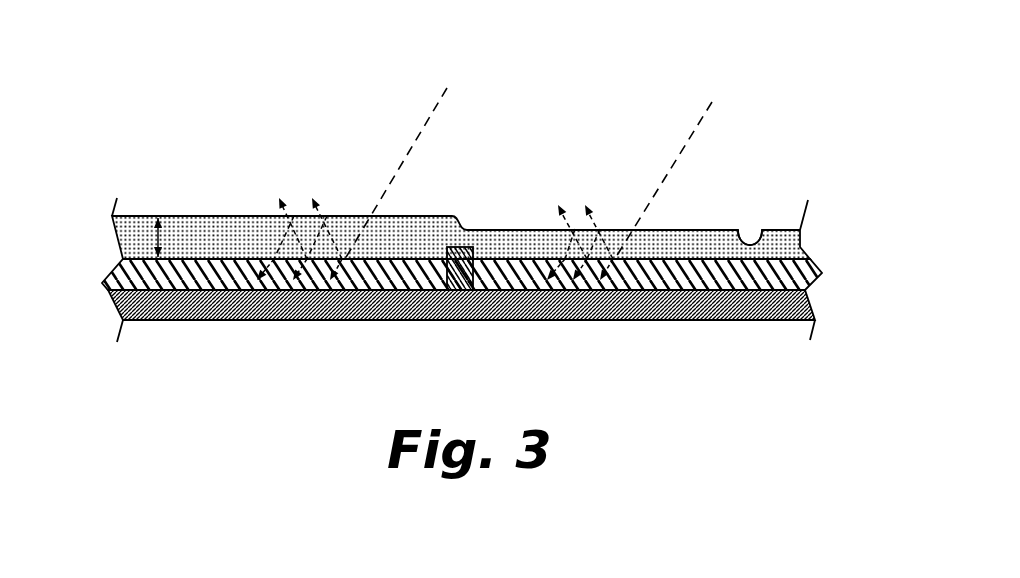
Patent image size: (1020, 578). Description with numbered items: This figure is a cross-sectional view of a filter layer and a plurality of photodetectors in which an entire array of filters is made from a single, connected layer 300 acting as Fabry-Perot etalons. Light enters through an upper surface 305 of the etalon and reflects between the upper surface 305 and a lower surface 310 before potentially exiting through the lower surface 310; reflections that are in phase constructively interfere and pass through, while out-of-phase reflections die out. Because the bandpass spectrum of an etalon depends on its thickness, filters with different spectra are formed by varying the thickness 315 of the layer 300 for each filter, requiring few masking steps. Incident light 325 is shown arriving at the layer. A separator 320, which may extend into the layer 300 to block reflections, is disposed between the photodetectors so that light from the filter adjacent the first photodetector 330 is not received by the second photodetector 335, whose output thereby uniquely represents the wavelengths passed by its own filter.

The layer 300 is at (703, 250).
The upper surface 305 is at (766, 238).
The lower surface 310 is at (800, 247).
The thickness 315 is at (137, 236).
The separator 320 is at (467, 247).
The incident light 325 is at (432, 190).
The first photodetector 330 is at (518, 287).
The second photodetector 335 is at (378, 287).